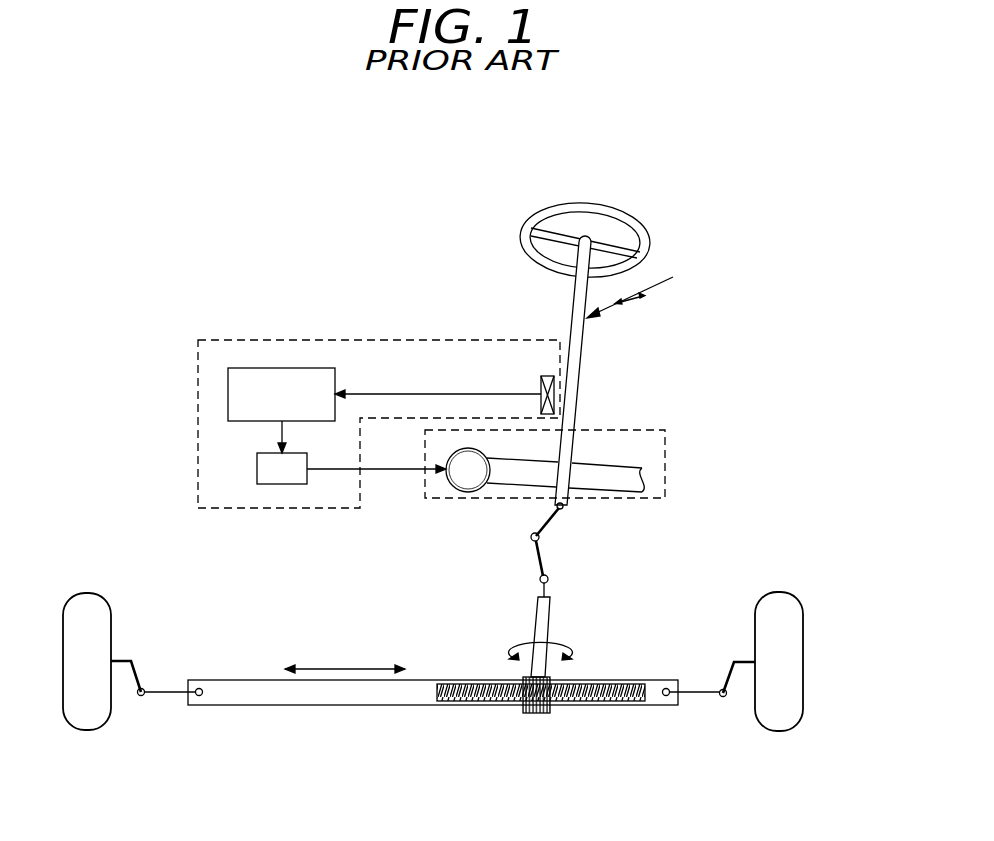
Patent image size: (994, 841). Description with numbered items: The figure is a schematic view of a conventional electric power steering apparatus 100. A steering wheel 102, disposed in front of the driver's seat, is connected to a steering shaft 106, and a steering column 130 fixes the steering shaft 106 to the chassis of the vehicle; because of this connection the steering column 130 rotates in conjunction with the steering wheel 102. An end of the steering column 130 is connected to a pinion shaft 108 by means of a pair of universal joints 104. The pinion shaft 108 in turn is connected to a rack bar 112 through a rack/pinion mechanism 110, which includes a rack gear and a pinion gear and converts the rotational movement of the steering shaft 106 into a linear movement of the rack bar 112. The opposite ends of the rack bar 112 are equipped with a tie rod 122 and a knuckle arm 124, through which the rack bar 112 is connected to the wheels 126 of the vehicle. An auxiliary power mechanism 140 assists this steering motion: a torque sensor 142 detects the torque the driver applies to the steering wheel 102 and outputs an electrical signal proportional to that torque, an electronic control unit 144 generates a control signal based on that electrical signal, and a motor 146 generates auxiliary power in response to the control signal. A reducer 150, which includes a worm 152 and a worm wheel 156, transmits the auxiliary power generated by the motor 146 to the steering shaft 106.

The electric power steering apparatus 100 is at (796, 174).
The steering wheel 102 is at (524, 221).
The universal joints 104 is at (547, 527).
The steering shaft 106 is at (586, 333).
The pinion shaft 108 is at (535, 625).
The rack/pinion mechanism 110 is at (560, 698).
The rack bar 112 is at (263, 687).
The tie rod 122 is at (708, 690).
The knuckle arm 124 is at (123, 657).
The wheel 126 is at (790, 602).
The steering column 130 is at (649, 290).
The auxiliary power mechanism 140 is at (287, 340).
The torque sensor 142 is at (541, 383).
The electronic control unit 144 is at (250, 368).
The motor 146 is at (280, 484).
The reducer 150 is at (665, 460).
The worm 152 is at (467, 477).
The worm wheel 156 is at (577, 458).